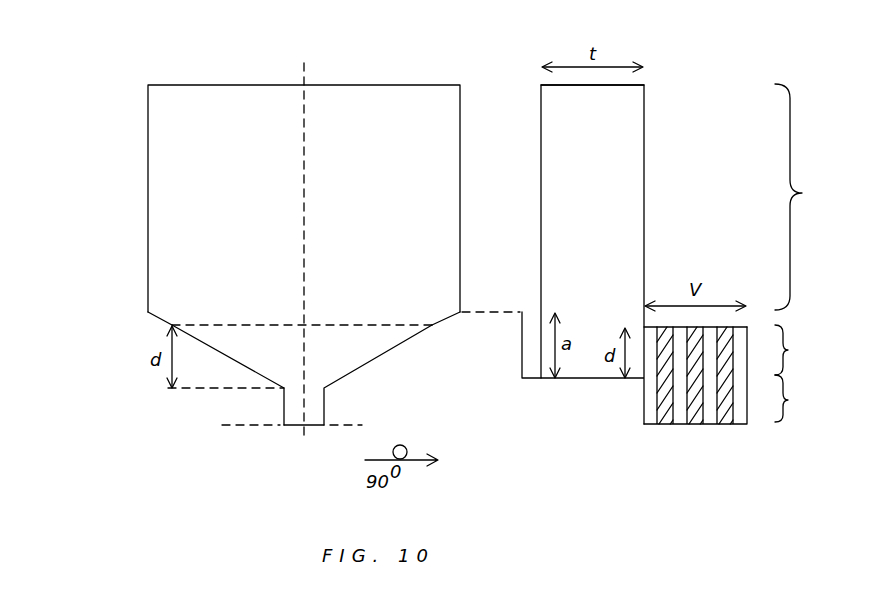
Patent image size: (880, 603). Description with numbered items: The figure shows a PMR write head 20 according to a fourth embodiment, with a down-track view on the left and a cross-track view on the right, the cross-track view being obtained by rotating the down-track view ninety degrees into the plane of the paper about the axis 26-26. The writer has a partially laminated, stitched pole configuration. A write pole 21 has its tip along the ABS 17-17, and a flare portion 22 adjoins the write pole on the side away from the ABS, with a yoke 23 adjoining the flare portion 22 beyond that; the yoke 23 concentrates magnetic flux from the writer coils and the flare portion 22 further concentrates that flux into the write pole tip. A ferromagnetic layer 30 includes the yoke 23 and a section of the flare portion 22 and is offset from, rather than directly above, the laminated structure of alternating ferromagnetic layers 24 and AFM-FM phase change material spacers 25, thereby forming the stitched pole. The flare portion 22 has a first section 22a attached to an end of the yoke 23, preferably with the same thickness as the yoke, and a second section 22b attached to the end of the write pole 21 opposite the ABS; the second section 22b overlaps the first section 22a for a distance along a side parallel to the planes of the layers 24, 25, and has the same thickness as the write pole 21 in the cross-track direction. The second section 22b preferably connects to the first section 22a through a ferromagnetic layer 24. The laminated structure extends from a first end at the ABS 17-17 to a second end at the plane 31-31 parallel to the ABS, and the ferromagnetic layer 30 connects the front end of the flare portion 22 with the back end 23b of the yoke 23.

The PMR write head 20 is at (127, 70).
The yoke 23 is at (163, 222).
The plane 31- 31 is at (172, 325).
The flare portion 22 is at (340, 360).
The write pole 21 is at (293, 425).
The ABS 17- 17 is at (292, 427).
The axis 26- 26 is at (304, 253).
The first section of flare portion 22a is at (522, 350).
The ferromagnetic layer 30 is at (556, 203).
The back end of yoke 23b is at (628, 82).
The second section of flare portion 22b is at (735, 350).
The ferromagnetic layers 24 is at (655, 424).
The AFM-FM phase change material spacers 25 is at (668, 424).